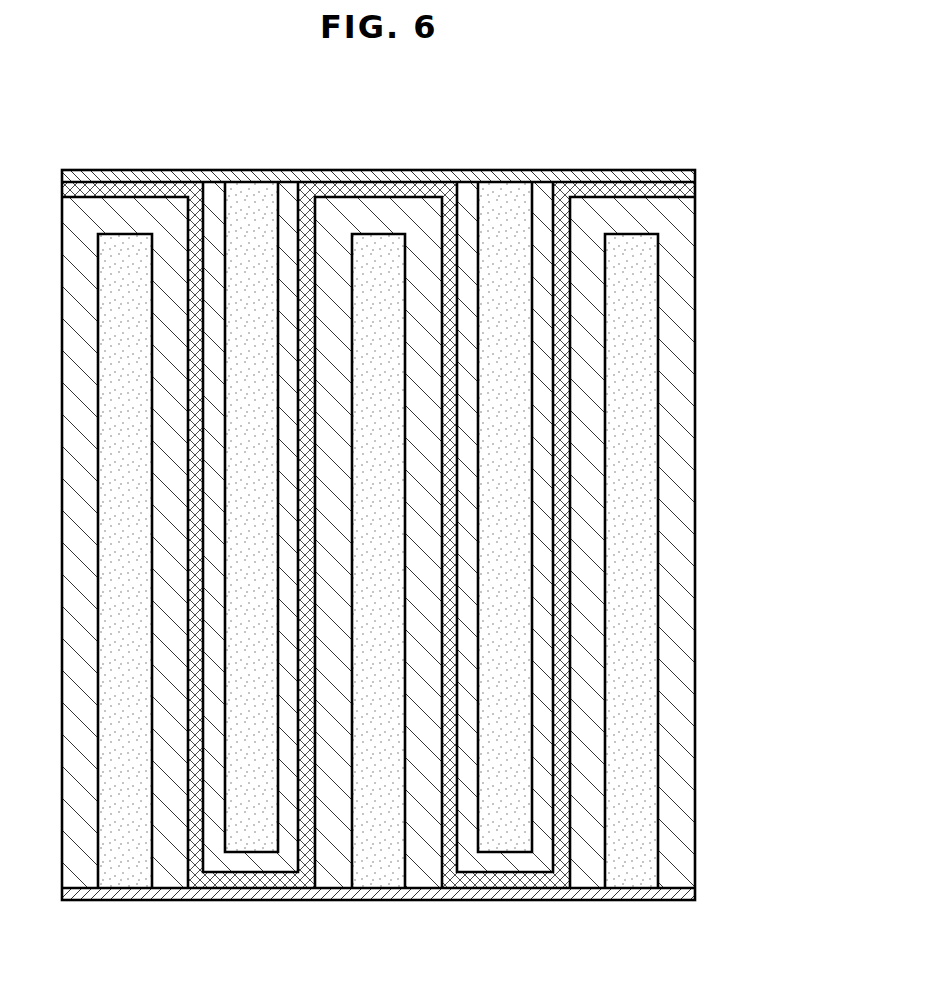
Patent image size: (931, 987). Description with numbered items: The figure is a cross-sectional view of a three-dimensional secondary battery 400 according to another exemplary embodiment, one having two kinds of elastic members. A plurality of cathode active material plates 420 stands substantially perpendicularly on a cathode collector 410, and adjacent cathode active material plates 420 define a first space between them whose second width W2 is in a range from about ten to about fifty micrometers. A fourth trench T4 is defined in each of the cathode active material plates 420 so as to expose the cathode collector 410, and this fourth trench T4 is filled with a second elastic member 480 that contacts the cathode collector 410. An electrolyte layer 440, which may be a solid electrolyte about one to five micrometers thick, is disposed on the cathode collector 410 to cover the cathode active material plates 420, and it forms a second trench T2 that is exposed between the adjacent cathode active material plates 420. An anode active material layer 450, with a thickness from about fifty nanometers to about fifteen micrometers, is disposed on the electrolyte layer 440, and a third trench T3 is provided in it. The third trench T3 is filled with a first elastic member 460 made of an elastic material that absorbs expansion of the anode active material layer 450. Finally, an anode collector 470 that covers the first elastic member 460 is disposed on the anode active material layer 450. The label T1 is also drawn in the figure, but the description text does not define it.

The 3D secondary battery 400 is at (690, 144).
The cathode collector 410 is at (695, 892).
The cathode active material plates 420 is at (682, 762).
The electrolyte layer 440 is at (695, 190).
The anode active material layer 450 is at (470, 190).
The first elastic member 460 is at (508, 195).
The anode collector 470 is at (695, 176).
The second elastic member 480 is at (378, 872).
The thickness of lower electrode T1 is at (569, 567).
The second trench T2 is at (553, 505).
The third trench T3 is at (532, 438).
The fourth trench T4 is at (350, 833).
The second width W2 is at (568, 947).